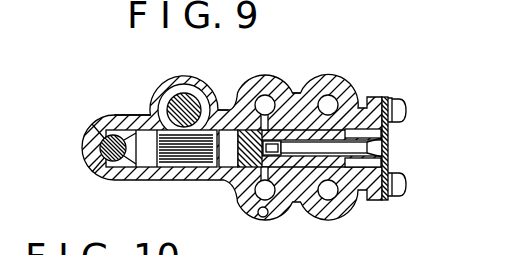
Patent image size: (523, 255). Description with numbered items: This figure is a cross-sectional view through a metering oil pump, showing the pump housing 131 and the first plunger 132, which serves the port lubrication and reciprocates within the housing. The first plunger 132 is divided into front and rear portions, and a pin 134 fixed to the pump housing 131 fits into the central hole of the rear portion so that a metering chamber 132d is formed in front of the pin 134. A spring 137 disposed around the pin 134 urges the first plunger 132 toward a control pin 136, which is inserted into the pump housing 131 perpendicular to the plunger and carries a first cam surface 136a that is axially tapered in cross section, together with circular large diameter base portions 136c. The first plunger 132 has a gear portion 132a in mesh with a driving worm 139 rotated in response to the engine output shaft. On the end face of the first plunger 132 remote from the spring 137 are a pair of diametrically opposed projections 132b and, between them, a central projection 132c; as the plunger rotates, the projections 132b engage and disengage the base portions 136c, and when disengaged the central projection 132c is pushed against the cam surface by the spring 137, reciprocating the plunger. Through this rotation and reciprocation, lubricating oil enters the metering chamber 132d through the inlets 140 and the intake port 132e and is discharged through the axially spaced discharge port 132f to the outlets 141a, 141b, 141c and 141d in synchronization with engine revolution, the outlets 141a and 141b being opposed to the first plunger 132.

The first plunger 132 is at (313, 221).
The driving worm 139 is at (168, 85).
The pump housing 131 is at (208, 79).
The outlet 141a is at (251, 217).
The outlet 141b is at (269, 95).
The outlet 141c is at (352, 205).
The outlet 141d is at (334, 100).
The gear portion 132a is at (184, 168).
The projections 132b is at (131, 117).
The central projection 132c is at (128, 169).
The metering chamber 132d is at (240, 152).
The intake port 132e is at (296, 100).
The discharge port 132f is at (236, 108).
The control pin 136 is at (108, 150).
The first cam surface 136a is at (90, 124).
The large diameter base portions 136c is at (104, 176).
The inlets 140 is at (286, 162).
The spring 137 is at (390, 156).
The pin 134 is at (388, 146).